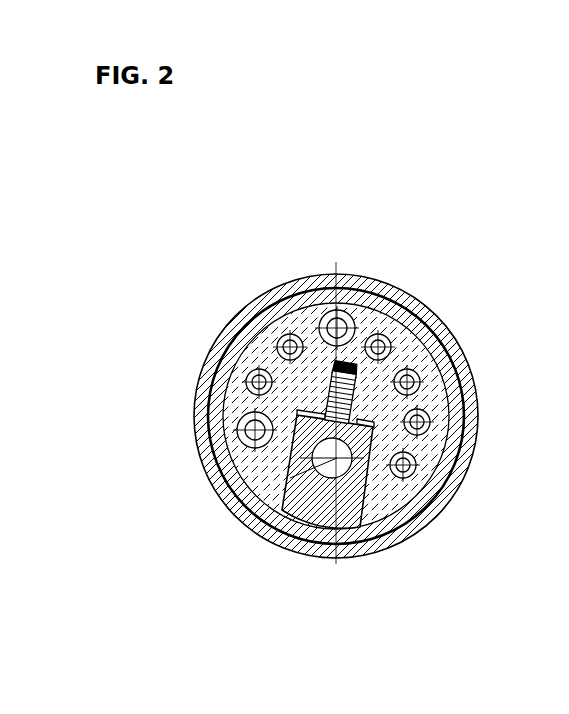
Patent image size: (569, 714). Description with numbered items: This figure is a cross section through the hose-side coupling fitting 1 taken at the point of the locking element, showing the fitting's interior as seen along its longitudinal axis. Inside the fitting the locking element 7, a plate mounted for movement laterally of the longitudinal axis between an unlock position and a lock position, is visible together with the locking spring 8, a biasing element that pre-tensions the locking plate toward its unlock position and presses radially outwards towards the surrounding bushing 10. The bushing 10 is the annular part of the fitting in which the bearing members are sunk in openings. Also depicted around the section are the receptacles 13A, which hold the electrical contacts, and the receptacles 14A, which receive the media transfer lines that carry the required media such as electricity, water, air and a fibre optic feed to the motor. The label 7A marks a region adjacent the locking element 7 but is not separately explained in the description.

The hose-side coupling fitting 1 is at (339, 146).
The locking element 7 is at (337, 528).
The block holder disk 7A is at (250, 500).
The locking spring 8 is at (353, 394).
The bushing 10 is at (355, 273).
The receptacles for electrical contacts 13A is at (228, 330).
The receptacles for media transfer lines 14A is at (208, 390).